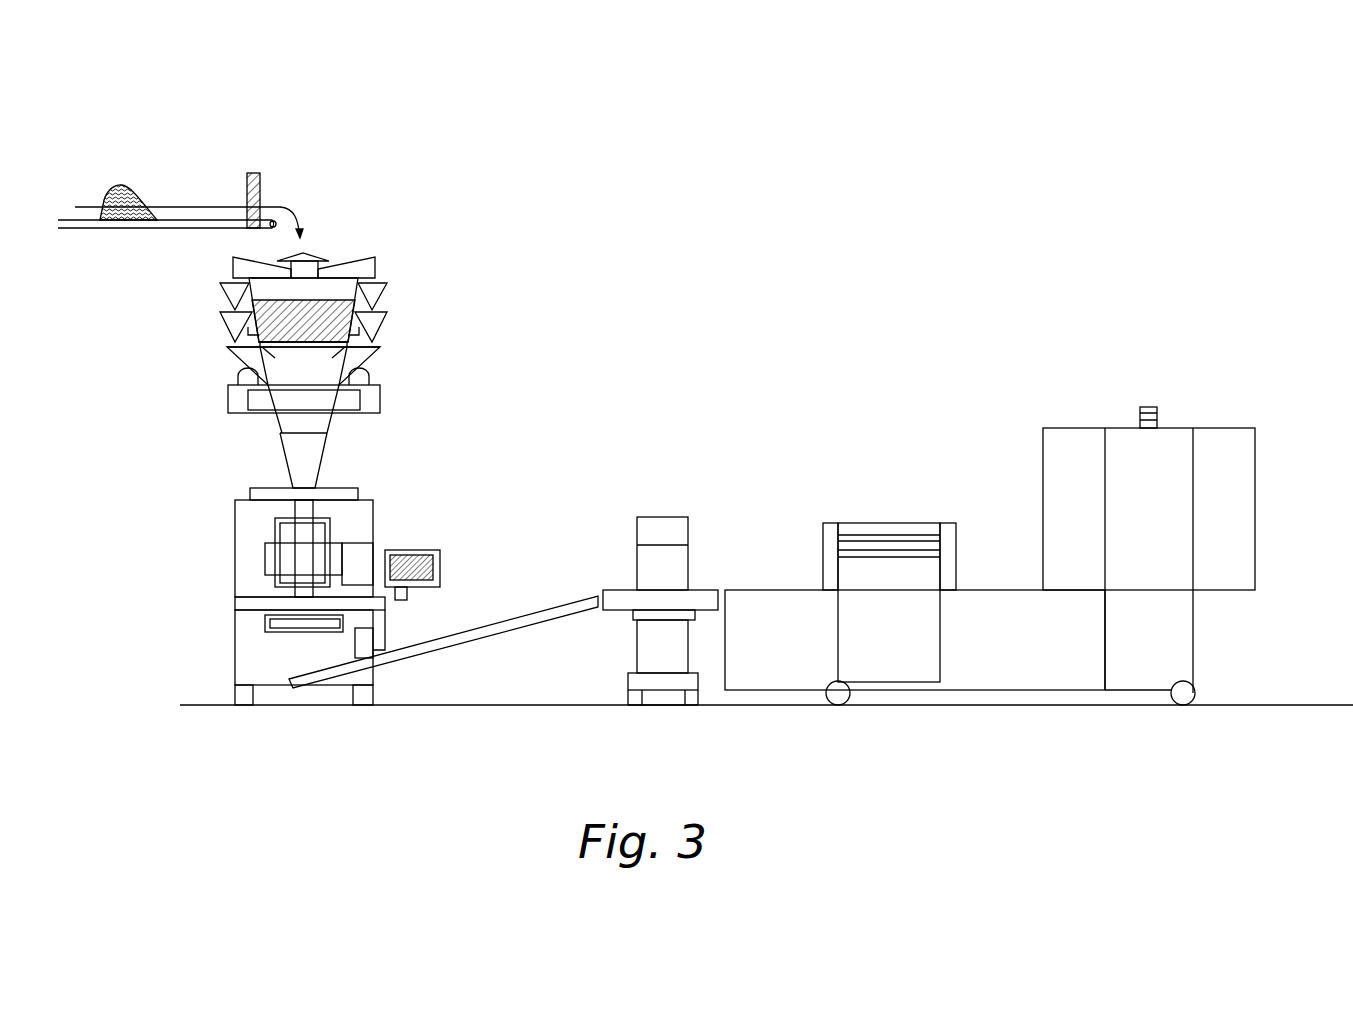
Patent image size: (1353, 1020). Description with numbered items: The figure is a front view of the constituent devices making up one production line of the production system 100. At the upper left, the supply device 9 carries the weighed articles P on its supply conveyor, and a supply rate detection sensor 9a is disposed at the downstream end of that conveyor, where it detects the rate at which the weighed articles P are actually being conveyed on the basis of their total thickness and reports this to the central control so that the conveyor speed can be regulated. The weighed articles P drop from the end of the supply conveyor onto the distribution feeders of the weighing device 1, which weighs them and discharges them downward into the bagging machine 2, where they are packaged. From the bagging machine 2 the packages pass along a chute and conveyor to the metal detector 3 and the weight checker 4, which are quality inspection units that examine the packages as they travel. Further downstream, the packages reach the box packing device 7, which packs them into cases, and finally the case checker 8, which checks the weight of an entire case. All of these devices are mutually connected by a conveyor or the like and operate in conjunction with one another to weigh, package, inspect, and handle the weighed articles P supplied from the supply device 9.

The production system 100 is at (1012, 138).
The supply device 9 is at (108, 153).
The weighed articles P is at (127, 184).
The supply rate detection sensor 9a is at (255, 173).
The weighing device 1 is at (367, 227).
The bagging machine 2 is at (397, 483).
The metal detector 3 is at (682, 566).
The weight checker 4 is at (633, 612).
The box packing device 7 is at (890, 537).
The case checker 8 is at (1172, 440).